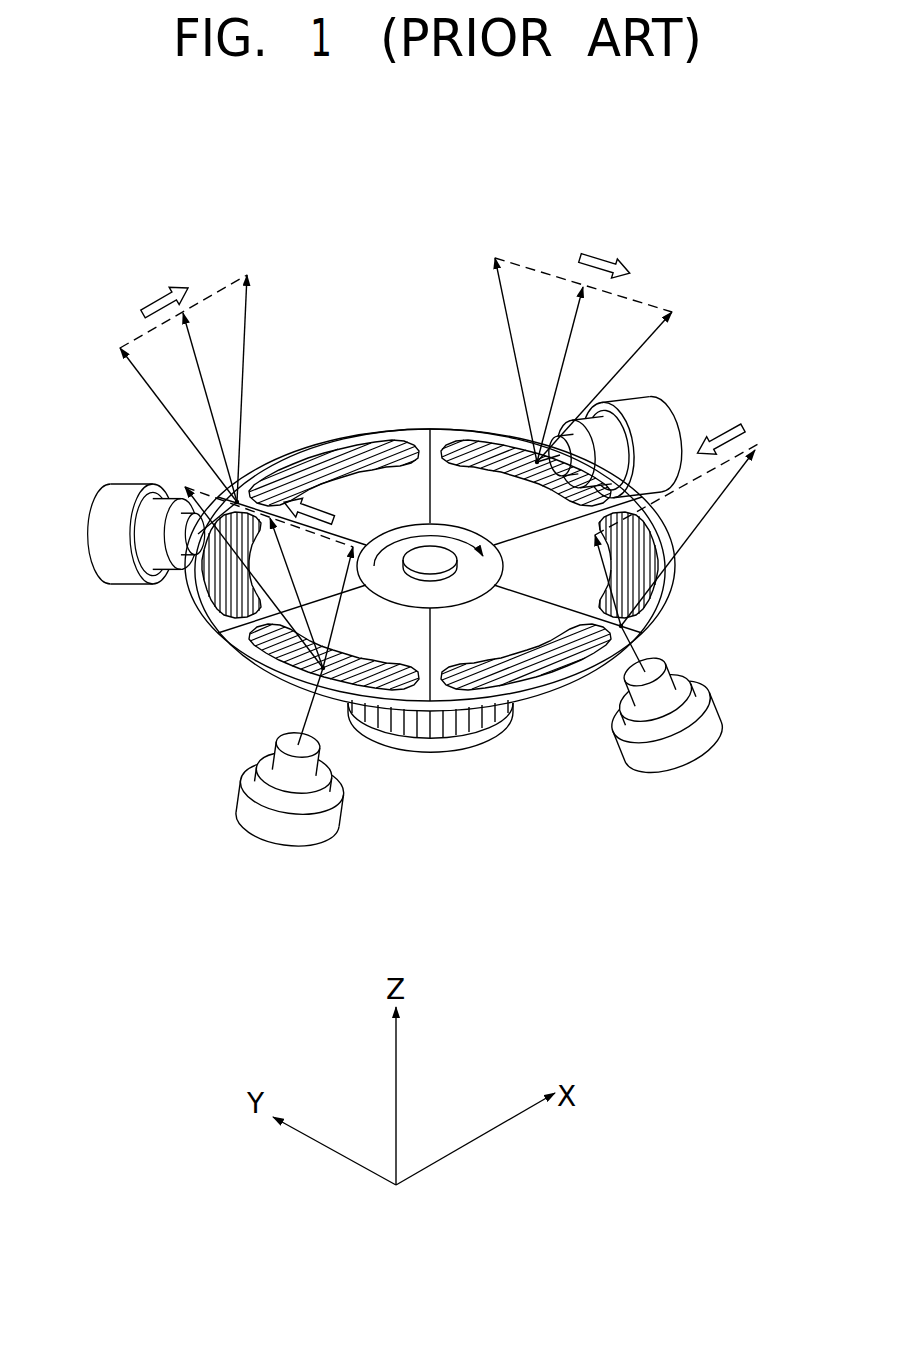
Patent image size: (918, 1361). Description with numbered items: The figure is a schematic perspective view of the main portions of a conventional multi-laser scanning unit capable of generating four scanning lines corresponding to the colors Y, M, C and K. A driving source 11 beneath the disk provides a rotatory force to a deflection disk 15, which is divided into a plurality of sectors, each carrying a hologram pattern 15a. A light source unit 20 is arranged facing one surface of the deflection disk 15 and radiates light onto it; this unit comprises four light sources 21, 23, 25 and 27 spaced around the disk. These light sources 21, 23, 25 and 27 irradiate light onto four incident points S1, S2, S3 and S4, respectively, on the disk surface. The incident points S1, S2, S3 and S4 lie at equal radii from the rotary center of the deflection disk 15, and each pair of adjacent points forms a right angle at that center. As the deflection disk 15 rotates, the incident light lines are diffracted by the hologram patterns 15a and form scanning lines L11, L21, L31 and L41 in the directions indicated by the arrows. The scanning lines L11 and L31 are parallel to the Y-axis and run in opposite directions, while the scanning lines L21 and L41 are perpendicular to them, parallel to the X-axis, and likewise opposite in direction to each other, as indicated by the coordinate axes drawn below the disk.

The driving source 11 is at (397, 728).
The deflection disk 15 is at (522, 706).
The hologram pattern 15a is at (556, 662).
The light source unit 20 is at (442, 559).
The light source 21 is at (653, 417).
The light source 23 is at (680, 770).
The light source 25 is at (263, 843).
The light source 27 is at (110, 553).
The incident point S1 is at (537, 462).
The incident point S2 is at (620, 627).
The incident point S3 is at (323, 668).
The incident point S4 is at (237, 502).
The scanning line L11 is at (530, 267).
The scanning line L21 is at (755, 447).
The scanning line L31 is at (239, 538).
The scanning line L41 is at (220, 288).